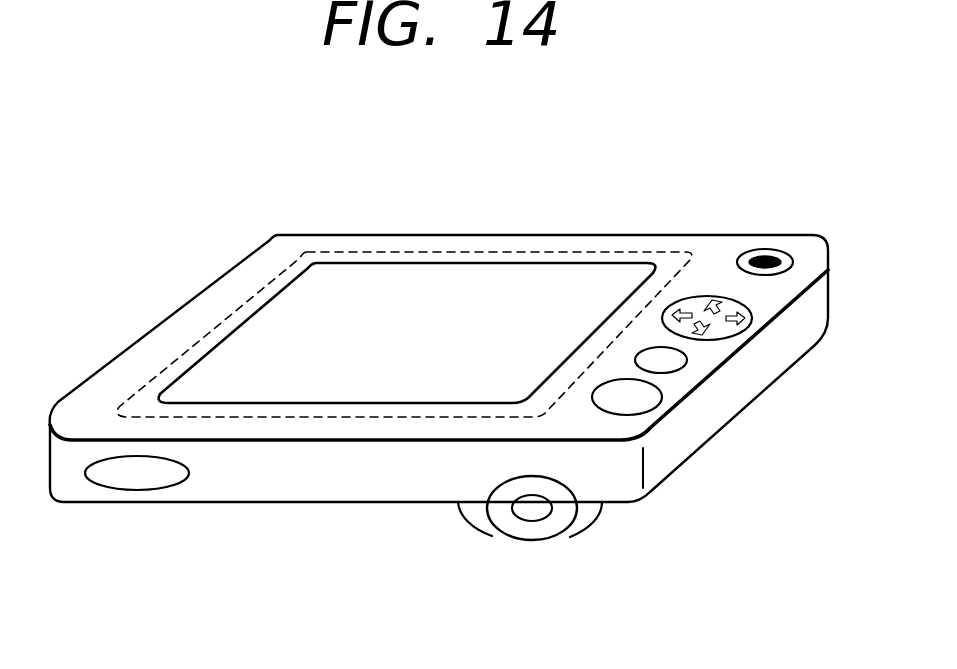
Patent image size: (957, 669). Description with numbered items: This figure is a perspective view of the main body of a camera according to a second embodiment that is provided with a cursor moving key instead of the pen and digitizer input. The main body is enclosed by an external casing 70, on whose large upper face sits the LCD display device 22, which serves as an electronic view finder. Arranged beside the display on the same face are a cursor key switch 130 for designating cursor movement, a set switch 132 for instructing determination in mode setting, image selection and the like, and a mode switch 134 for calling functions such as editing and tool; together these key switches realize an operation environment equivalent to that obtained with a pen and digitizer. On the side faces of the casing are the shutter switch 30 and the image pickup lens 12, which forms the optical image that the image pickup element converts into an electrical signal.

The external casing 70 is at (505, 231).
The LCD display device 22 is at (196, 331).
The shutter switch 30 is at (145, 476).
The image pickup lens 12 is at (536, 518).
The cursor key switch 130 is at (727, 332).
The set switch 132 is at (687, 364).
The mode switch 134 is at (658, 399).